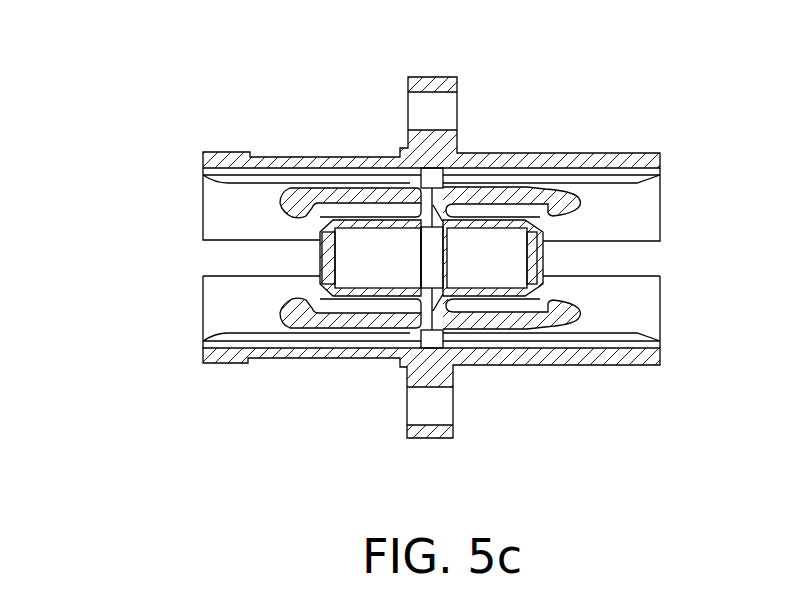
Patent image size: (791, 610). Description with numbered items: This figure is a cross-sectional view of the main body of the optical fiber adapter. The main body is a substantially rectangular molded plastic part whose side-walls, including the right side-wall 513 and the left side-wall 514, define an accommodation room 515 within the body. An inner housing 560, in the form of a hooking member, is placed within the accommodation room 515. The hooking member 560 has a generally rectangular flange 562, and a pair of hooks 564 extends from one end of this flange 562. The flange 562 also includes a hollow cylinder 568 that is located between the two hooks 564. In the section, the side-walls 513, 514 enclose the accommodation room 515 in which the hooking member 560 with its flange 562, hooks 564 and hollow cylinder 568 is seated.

The right side-wall 513 is at (225, 367).
The left side-wall 514 is at (228, 150).
The accommodation room 515 is at (250, 298).
The inner housing 560 is at (302, 258).
The flange 562 is at (432, 335).
The hooks 564 is at (296, 198).
The hollow cylinder 568 is at (322, 231).